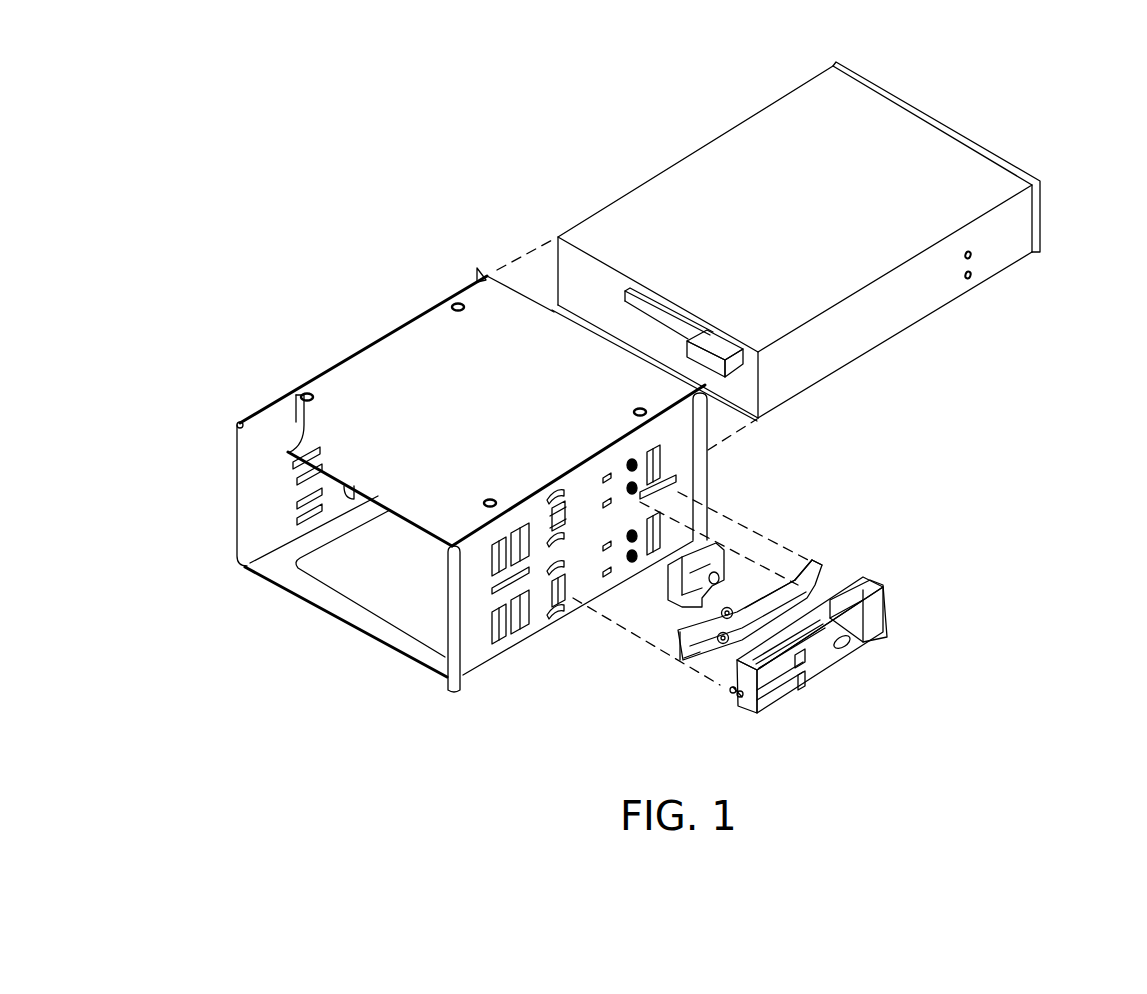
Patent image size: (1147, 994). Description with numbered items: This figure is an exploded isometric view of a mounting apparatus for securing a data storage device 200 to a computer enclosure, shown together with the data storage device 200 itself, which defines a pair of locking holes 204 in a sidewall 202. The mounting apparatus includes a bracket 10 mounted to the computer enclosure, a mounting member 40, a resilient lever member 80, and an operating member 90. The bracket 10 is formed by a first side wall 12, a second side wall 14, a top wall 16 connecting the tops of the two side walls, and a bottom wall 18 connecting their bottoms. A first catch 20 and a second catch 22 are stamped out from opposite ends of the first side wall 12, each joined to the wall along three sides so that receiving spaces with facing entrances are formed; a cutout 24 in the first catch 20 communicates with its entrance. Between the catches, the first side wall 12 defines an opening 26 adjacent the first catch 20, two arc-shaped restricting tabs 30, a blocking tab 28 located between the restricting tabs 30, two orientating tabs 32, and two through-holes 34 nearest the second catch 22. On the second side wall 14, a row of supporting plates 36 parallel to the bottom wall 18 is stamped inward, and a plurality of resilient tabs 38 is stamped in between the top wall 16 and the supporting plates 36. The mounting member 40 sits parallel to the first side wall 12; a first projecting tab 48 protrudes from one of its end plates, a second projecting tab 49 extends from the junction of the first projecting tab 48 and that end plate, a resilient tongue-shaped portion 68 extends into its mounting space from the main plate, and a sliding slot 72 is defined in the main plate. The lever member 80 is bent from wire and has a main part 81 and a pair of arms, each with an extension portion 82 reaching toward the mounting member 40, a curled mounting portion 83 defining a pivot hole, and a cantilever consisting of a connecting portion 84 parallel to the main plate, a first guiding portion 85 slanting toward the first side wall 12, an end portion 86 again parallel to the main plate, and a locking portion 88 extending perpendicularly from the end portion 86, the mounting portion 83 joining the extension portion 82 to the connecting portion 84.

The bracket 10 is at (355, 338).
The first side wall 12 is at (472, 658).
The second side wall 14 is at (256, 506).
The top wall 16 is at (355, 402).
The bottom wall 18 is at (340, 607).
The first catch 20 is at (486, 580).
The second catch 22 is at (660, 458).
The cutout 24 is at (527, 548).
The opening 26 is at (560, 613).
The blocking tab 28 is at (567, 520).
The restricting tabs 30 is at (563, 532).
The orientating tabs 32 is at (613, 505).
The through-holes 34 is at (642, 487).
The supporting plates 36 is at (293, 470).
The resilient tabs 38 is at (292, 422).
The mounting member 40 is at (845, 683).
The first projecting tab 48 is at (733, 695).
The second projecting tab 49 is at (742, 696).
The resilient tongue-shaped portion 68 is at (793, 673).
The sliding slot 72 is at (849, 648).
The lever member 80 is at (826, 589).
The main part 81 is at (682, 655).
The extension portion 82 is at (706, 653).
The curled mounting portion 83 is at (731, 609).
The connecting portion 84 is at (727, 635).
The first guiding portion 85 is at (780, 572).
The end portion 86 is at (823, 567).
The locking portion 88 is at (790, 580).
The operating member 90 is at (666, 608).
The data storage device 200 is at (688, 133).
The sidewall 202 is at (1008, 245).
The locking holes 204 is at (969, 278).